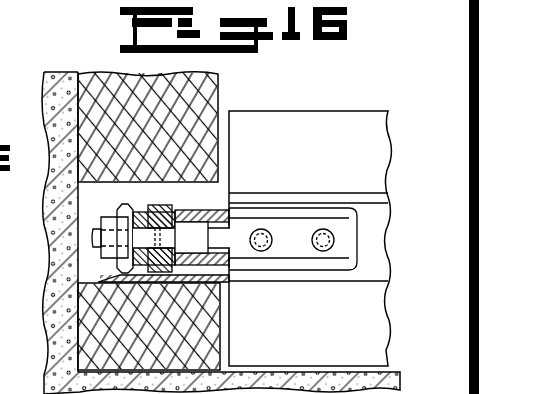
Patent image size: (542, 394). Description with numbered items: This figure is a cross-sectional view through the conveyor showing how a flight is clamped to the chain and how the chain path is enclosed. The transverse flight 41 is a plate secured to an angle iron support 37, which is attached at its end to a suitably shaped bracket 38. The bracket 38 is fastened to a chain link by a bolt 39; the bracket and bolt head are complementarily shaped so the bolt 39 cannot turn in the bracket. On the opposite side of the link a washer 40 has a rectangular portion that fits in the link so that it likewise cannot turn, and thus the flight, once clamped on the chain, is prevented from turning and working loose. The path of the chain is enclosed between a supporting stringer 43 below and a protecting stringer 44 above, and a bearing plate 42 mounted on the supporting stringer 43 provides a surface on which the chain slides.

The angle iron support 37 is at (281, 208).
The bracket 38 is at (272, 278).
The bolt 39 is at (161, 238).
The washer 40 is at (128, 204).
The transverse flight 41 is at (313, 120).
The bearing plate 42 is at (99, 268).
The supporting stringer 43 is at (221, 326).
The protecting stringer 44 is at (221, 106).